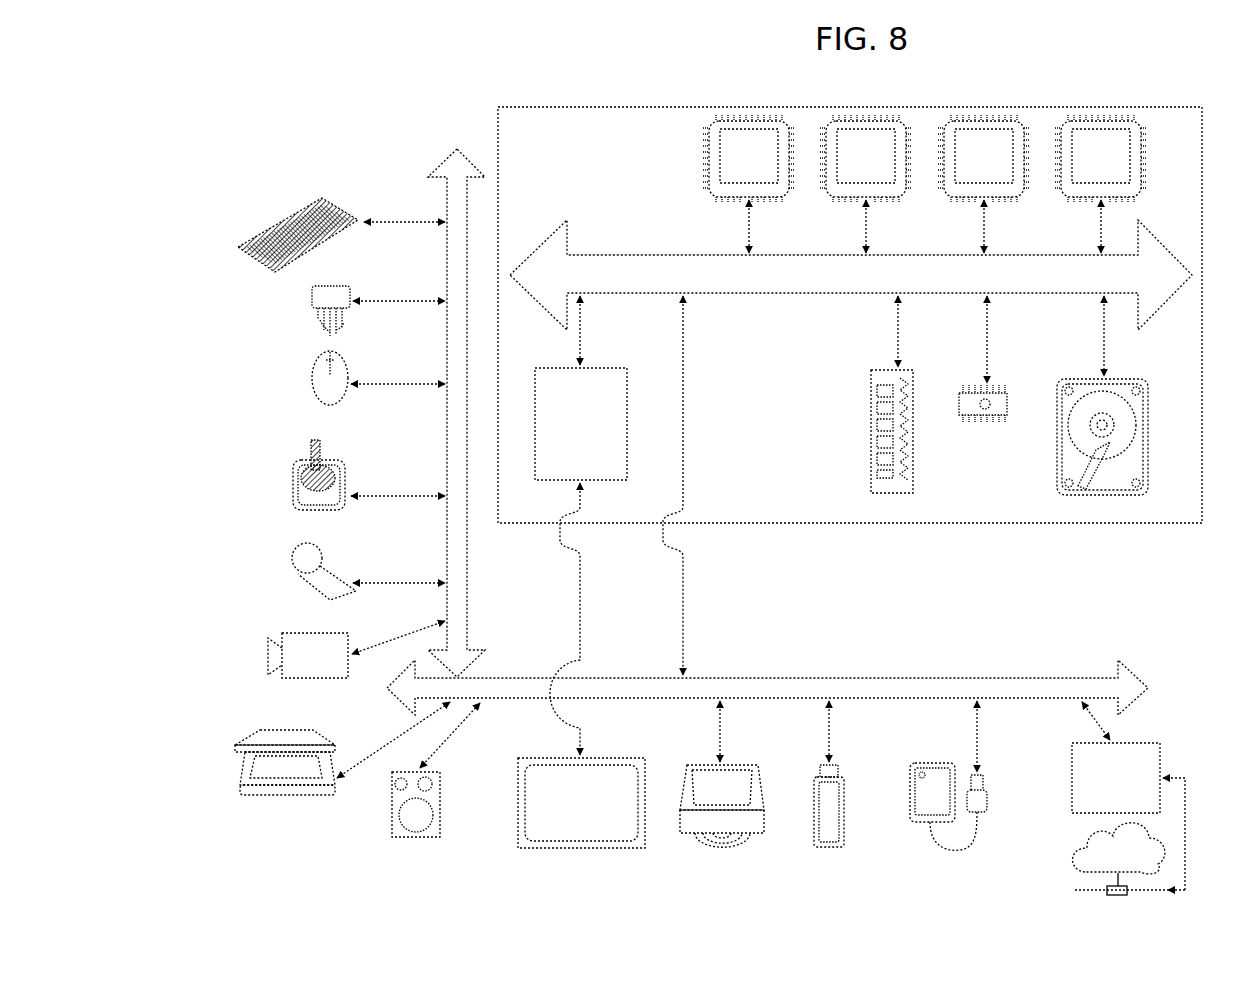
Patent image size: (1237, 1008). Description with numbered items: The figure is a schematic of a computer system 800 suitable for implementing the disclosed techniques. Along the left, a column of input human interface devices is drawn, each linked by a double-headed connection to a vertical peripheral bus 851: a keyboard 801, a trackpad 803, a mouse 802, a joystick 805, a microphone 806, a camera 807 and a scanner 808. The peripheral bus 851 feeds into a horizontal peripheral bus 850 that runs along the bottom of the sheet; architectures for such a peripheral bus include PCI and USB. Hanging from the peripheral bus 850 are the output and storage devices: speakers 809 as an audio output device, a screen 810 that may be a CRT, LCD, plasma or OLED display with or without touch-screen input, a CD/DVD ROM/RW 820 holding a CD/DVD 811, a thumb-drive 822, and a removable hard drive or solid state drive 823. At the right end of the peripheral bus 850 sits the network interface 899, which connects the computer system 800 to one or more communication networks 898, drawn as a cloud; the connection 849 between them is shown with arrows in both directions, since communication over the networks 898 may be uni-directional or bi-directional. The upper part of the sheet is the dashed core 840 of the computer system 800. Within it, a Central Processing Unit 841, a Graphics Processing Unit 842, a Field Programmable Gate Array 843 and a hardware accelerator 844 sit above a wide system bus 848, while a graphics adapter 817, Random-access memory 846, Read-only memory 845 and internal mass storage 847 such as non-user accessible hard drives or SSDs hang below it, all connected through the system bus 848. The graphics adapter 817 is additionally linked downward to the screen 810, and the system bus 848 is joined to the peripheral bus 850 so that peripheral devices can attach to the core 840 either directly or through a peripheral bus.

The computer system 800 is at (250, 86).
The keyboard 801 is at (240, 250).
The mouse 802 is at (310, 380).
The trackpad 803 is at (305, 312).
The joystick 805 is at (292, 497).
The microphone 806 is at (290, 568).
The camera 807 is at (270, 665).
The scanner 808 is at (240, 786).
The speakers 809 is at (412, 838).
The touch screen 810 is at (580, 849).
The CD/DVD 811 is at (705, 838).
The graphics adapter 817 is at (628, 457).
The CD/DVD ROM/RW 820 is at (752, 838).
The thumb-drive 822 is at (825, 850).
The removable hard drive or solid state drive 823 is at (920, 830).
The core 840 is at (832, 525).
The Central Processing Unit 841 is at (715, 198).
The Graphics Processing Unit 842 is at (832, 198).
The Field Programmable Gate Array 843 is at (948, 198).
The hardware accelerator 844 is at (1068, 198).
The Read-only memory 845 is at (972, 424).
The Random-access memory 846 is at (871, 430).
The internal mass storage 847 is at (1068, 378).
The system bus 848 is at (825, 294).
The network link 849 is at (1186, 790).
The peripheral bus 850 is at (978, 676).
The peripheral bus 851 is at (428, 170).
The communication networks 898 is at (1082, 868).
The network interface 899 is at (1072, 746).